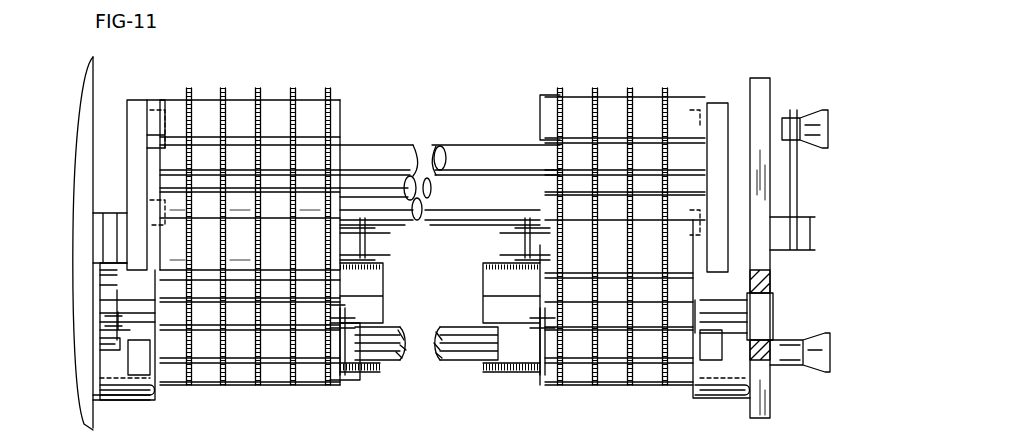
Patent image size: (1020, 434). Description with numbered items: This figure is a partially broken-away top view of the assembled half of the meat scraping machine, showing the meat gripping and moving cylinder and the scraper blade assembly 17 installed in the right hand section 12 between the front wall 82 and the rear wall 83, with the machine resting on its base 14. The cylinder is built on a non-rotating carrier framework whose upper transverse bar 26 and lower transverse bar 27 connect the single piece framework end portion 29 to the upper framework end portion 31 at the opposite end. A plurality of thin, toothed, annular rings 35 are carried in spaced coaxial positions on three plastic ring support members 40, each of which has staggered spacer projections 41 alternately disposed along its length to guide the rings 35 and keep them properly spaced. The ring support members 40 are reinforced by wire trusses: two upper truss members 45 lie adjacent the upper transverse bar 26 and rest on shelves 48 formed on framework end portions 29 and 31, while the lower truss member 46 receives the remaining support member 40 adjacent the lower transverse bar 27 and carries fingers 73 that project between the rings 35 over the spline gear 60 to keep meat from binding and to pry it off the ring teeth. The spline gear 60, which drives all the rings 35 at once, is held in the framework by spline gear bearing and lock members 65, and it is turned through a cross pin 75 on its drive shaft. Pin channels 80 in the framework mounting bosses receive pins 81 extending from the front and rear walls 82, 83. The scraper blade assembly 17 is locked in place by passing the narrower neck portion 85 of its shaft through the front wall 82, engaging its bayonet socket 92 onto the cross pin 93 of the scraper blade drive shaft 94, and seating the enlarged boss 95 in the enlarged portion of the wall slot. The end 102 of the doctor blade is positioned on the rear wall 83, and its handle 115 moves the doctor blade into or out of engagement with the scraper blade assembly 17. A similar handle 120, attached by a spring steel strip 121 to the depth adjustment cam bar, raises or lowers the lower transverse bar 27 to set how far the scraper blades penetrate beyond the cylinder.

The right hand section 12 is at (359, 52).
The base 14 is at (400, 432).
The scraper blade assembly 17 is at (297, 356).
The upper transverse bar 26 is at (450, 152).
The lower transverse bar 27 is at (437, 222).
The framework end portion 29 is at (140, 100).
The upper framework end portion 31 is at (718, 103).
The rings 35 is at (333, 95).
The ring support members 40 is at (155, 193).
The spacer projections 41 is at (250, 97).
The upper truss members 45 is at (385, 262).
The lower truss member 46 is at (520, 310).
The shelves 48 is at (147, 135).
The spline gear 60 is at (437, 360).
The spline gear bearing and lock members 65 is at (148, 358).
The fingers 73 is at (340, 376).
The cross pin 75 is at (100, 346).
The pin channels 80 is at (132, 393).
The pins 81 is at (95, 395).
The front wall 82 is at (760, 82).
The rear wall 83 is at (84, 76).
The neck portion 85 is at (770, 284).
The bayonet socket 92 is at (102, 258).
The cross pin 93 is at (112, 325).
The scraper blade drive shaft 94 is at (108, 313).
The enlarged boss 95 is at (765, 310).
The end 102 is at (103, 218).
The handle 115 is at (826, 352).
The handle 120 is at (822, 128).
The spring steel strip 121 is at (795, 165).